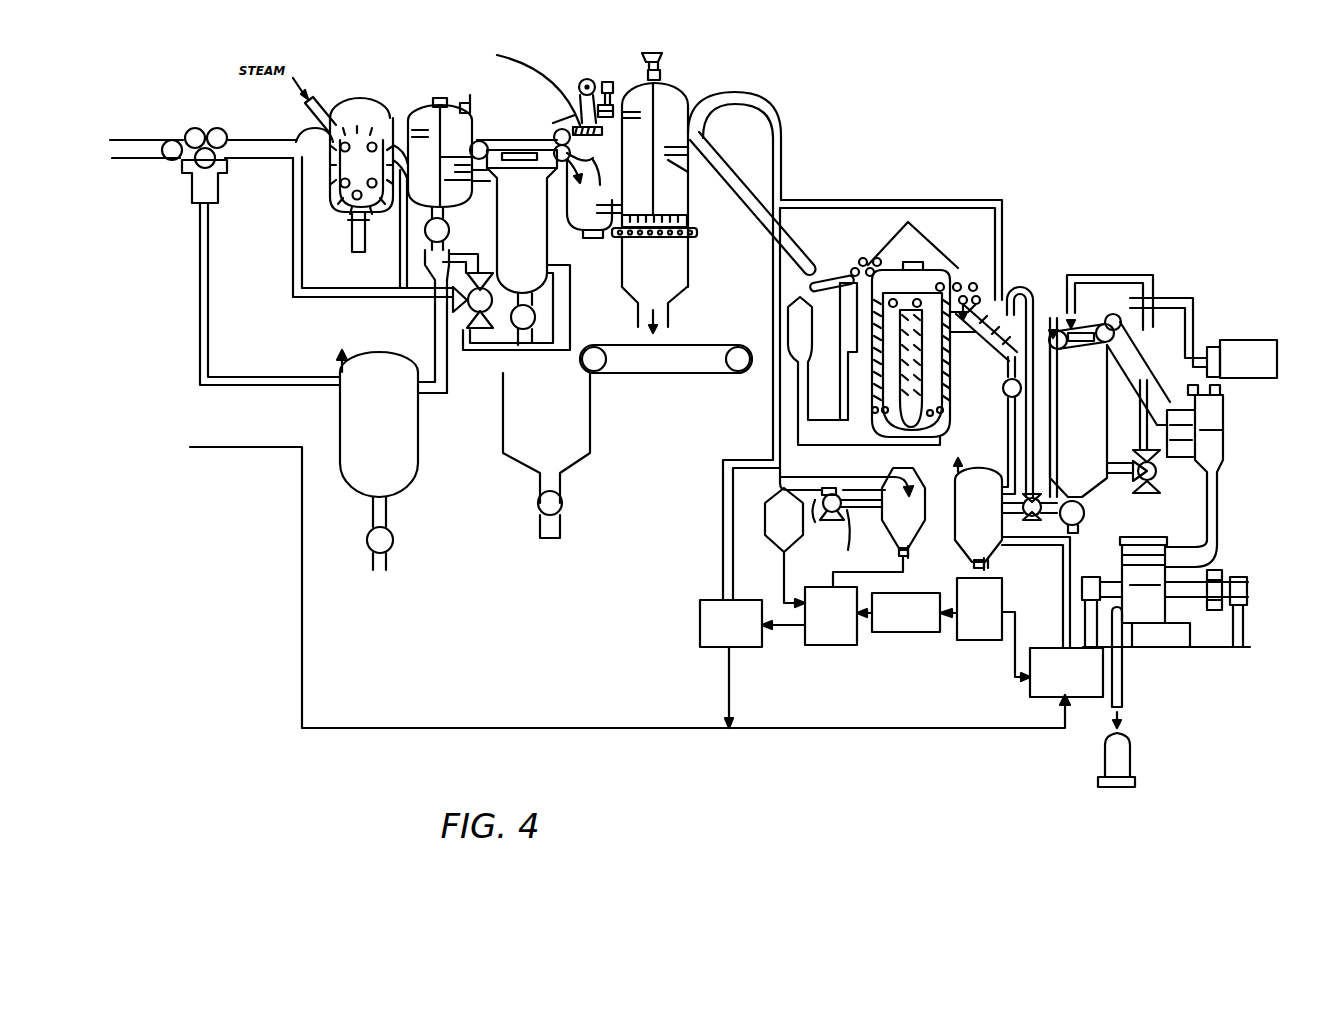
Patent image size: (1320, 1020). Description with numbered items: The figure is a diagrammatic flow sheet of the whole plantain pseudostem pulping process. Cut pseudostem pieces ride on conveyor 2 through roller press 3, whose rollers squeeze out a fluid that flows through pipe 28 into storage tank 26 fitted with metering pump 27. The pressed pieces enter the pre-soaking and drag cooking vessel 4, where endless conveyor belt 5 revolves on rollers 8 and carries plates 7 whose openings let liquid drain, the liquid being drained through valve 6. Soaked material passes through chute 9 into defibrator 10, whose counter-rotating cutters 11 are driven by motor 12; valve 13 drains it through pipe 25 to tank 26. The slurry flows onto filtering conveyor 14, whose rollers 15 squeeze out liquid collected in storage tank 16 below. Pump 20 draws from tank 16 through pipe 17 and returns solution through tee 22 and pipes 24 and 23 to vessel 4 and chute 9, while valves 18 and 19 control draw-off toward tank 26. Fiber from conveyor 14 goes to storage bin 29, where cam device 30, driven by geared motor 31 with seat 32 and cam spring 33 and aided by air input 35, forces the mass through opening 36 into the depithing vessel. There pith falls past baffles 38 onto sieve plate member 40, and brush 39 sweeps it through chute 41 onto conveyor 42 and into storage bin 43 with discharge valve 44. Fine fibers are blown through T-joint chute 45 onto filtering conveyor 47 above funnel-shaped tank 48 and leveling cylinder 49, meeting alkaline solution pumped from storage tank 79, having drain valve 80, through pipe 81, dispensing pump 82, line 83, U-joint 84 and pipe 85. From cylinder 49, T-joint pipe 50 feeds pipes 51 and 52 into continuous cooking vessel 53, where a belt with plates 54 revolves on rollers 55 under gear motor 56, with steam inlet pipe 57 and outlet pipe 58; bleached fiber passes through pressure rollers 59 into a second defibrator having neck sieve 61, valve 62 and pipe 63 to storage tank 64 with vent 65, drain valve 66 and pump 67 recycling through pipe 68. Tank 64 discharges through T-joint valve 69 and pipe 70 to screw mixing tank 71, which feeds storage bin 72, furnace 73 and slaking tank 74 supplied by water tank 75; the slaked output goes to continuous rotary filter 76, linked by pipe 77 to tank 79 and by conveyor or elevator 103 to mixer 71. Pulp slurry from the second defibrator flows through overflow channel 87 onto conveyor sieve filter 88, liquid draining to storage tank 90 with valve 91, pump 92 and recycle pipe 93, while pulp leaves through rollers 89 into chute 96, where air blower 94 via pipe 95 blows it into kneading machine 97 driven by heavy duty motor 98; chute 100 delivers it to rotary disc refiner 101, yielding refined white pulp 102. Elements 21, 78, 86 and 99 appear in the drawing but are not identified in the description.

The conveyor 2 is at (150, 140).
The roller press 3 is at (210, 130).
The pre-soaking and drag cooking vessel 4 is at (368, 98).
The endless conveyor belt 5 is at (359, 183).
The valve 6 is at (348, 232).
The plates 7 is at (340, 200).
The rollers 8 is at (359, 157).
The chute 9 is at (368, 226).
The defibrator 10 is at (415, 108).
The cutters 11 is at (478, 186).
The motor 12 is at (474, 104).
The valve 13 is at (449, 225).
The filtering conveyor 14 is at (522, 143).
The rollers 15 is at (554, 128).
The storage tank 16 is at (548, 250).
The pipe 17 is at (456, 248).
The valve 18 is at (534, 318).
The valve 19 is at (576, 310).
The pump 20 is at (492, 300).
The valve inlet 21 is at (453, 312).
The tee 22 is at (405, 298).
The pipe 23 is at (400, 277).
The pipe 24 is at (293, 262).
The pipe 25 is at (560, 350).
The storage tank 26 is at (340, 426).
The metering pump 27 is at (393, 540).
The pipe 28 is at (210, 295).
The storage bin 29 is at (532, 81).
The mechanical cam device 30 is at (583, 75).
The geared motor 31 is at (615, 84).
The seat 32 is at (592, 148).
The cam spring 33 is at (575, 110).
The air input 35 is at (592, 173).
The large opening 36 is at (594, 199).
The baffles 38 is at (688, 180).
The brush 39 is at (687, 222).
The sieve plate member 40 is at (697, 238).
The chute 41 is at (688, 283).
The conveyor 42 is at (660, 378).
The storage bin 43 is at (592, 440).
The discharge valve 44 is at (563, 513).
The T-joint chute 45 is at (708, 132).
The filtering conveyor 47 is at (850, 262).
The funnel-shaped tank 48 is at (808, 285).
The leveling cylinder 49 is at (812, 335).
The T-joint pipe 50 is at (798, 422).
The pipe 51 is at (825, 351).
The pipe 52 is at (838, 410).
The continuous cooking vessel 53 is at (848, 362).
The plates 54 is at (952, 446).
The rollers 55 is at (945, 415).
The heavy duty gear motor 56 is at (925, 262).
The steam inlet pipe 57 is at (986, 349).
The outlet pipe 58 is at (971, 334).
The pressure rollers 59 is at (965, 282).
The neck sieve 61 is at (990, 362).
The valve 62 is at (1008, 397).
The pipe 63 is at (1008, 450).
The storage tank 64 is at (955, 512).
The vent 65 is at (943, 464).
The drain valve 66 is at (972, 568).
The pump 67 is at (1032, 502).
The pipe 68 is at (1035, 285).
The T-joint valve 69 is at (1078, 557).
The pipe 70 is at (1063, 590).
The screw mixing tank 71 is at (1080, 700).
The storage bin 72 is at (977, 641).
The furnace 73 is at (906, 633).
The slaking tank 74 is at (842, 646).
The water tank 75 is at (768, 537).
The continuous rotary filter 76 is at (700, 640).
The pipe 77 is at (723, 540).
The tank 78 is at (888, 483).
The storage tank 79 is at (880, 510).
The drain valve 80 is at (899, 553).
The pipe 81 is at (830, 538).
The dispensing pump 82 is at (826, 519).
The line 83 is at (773, 322).
The U-joint 84 is at (783, 197).
The pipe 85 is at (783, 136).
The bleaching enclosure 86 is at (925, 200).
The overflow channel 87 is at (1051, 389).
The conveyor sieve filter 88 is at (1093, 322).
The rollers 89 is at (1116, 313).
The storage tank 90 is at (1107, 408).
The valve 91 is at (1085, 515).
The pump 92 is at (1144, 436).
The pipe 93 is at (1118, 275).
The air blower 94 is at (1273, 340).
The pipe 95 is at (1195, 315).
The chute 96 is at (1165, 358).
The kneading machine 97 is at (1223, 458).
The heavy duty motor 98 is at (1210, 393).
The separator 99 is at (1223, 437).
The chute 100 is at (1218, 543).
The rotary disc refiner 101 is at (1165, 537).
The refined white pulp 102 is at (1131, 755).
The conveyor or elevator 103 is at (922, 728).